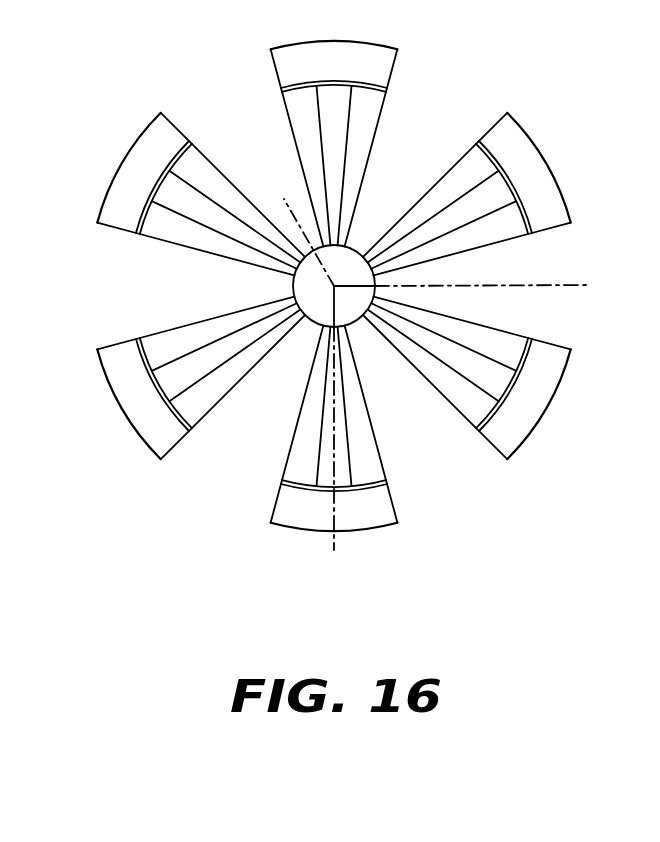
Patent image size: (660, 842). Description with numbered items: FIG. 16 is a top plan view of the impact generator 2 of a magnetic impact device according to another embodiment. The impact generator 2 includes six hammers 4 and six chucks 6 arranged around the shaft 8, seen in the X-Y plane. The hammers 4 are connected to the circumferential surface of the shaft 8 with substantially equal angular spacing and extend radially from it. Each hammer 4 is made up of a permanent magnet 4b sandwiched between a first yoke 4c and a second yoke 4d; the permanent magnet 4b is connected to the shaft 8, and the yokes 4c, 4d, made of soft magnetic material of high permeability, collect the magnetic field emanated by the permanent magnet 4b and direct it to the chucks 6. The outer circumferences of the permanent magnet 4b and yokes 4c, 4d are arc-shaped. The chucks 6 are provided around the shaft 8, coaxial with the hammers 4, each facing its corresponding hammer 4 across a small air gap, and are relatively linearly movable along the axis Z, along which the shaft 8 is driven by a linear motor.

The impact generator 2 is at (133, 462).
The hammer 4 is at (185, 248).
The permanent magnet 4b is at (349, 465).
The first yoke 4c is at (291, 447).
The second yoke 4d is at (367, 420).
The chuck 6 is at (123, 180).
The shaft 8 is at (334, 286).